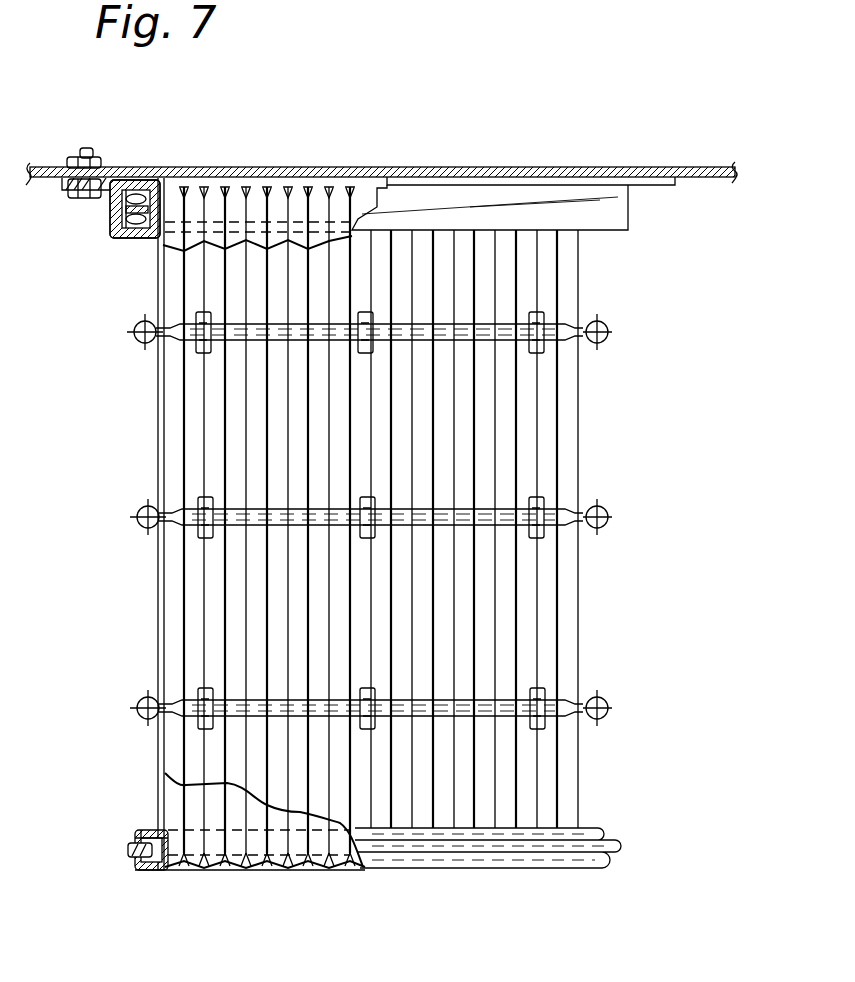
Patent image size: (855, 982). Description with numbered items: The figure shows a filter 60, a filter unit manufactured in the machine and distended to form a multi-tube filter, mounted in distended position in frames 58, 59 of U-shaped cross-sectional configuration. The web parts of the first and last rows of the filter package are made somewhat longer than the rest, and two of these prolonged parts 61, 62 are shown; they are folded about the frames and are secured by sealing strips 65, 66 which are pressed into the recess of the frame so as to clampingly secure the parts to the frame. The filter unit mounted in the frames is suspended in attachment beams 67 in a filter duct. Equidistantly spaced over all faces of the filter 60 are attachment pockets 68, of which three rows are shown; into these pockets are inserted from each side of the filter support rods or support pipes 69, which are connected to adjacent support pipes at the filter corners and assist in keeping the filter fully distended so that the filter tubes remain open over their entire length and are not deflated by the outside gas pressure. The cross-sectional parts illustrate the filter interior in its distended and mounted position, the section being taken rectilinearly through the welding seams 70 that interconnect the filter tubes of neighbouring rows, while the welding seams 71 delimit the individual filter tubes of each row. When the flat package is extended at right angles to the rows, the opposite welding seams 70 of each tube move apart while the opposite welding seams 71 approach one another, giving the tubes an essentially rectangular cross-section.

The frame 58 is at (113, 234).
The frame 59 is at (142, 868).
The filter 60 is at (157, 433).
The prolonged part 61 is at (143, 233).
The prolonged part 62 is at (137, 830).
The sealing strip 65 is at (109, 207).
The sealing strip 66 is at (128, 850).
The attachment beam 67 is at (110, 219).
The attachment pocket 68 is at (360, 347).
The support pipe 69 is at (556, 323).
The welding seam 70 is at (217, 192).
The welding seam 71 is at (202, 208).